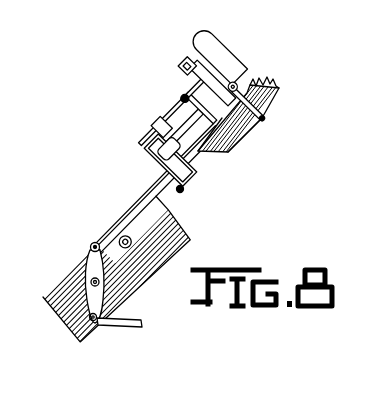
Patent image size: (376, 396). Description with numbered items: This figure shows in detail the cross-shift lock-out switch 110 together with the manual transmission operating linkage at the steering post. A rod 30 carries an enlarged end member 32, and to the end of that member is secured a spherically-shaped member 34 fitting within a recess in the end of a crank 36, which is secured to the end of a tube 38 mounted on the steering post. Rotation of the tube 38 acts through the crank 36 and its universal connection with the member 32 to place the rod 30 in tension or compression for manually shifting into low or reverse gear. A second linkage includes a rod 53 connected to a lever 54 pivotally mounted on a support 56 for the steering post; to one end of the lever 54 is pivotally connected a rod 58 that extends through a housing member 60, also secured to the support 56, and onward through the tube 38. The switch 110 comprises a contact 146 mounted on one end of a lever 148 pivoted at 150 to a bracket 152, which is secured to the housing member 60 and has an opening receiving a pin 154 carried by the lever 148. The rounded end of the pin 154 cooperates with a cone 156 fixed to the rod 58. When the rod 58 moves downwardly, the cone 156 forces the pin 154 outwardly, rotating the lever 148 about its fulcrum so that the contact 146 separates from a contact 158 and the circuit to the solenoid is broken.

The rod 30 is at (264, 118).
The enlarged end member 32 is at (213, 63).
The spherically-shaped member 34 is at (173, 56).
The crank 36 is at (187, 86).
The tube 38 is at (281, 93).
The rod 53 is at (123, 318).
The lever 54 is at (92, 270).
The support 56 is at (195, 237).
The rod 58 is at (96, 242).
The housing member 60 is at (138, 197).
The cross-shift switch 110 is at (130, 147).
The contact 146 is at (143, 148).
The lever 148 is at (166, 124).
The pivot 150 is at (148, 142).
The bracket 152 is at (235, 83).
The pin 154 is at (206, 153).
The cone 156 is at (232, 143).
The contact 158 is at (146, 148).